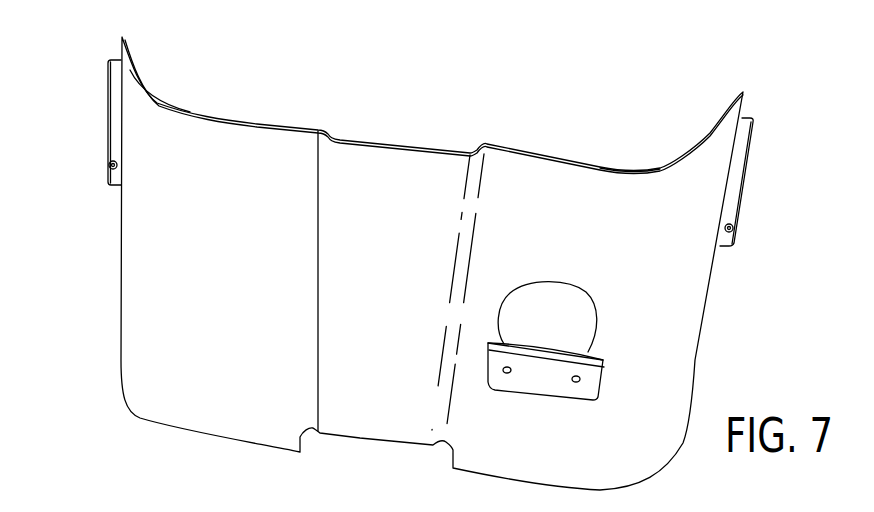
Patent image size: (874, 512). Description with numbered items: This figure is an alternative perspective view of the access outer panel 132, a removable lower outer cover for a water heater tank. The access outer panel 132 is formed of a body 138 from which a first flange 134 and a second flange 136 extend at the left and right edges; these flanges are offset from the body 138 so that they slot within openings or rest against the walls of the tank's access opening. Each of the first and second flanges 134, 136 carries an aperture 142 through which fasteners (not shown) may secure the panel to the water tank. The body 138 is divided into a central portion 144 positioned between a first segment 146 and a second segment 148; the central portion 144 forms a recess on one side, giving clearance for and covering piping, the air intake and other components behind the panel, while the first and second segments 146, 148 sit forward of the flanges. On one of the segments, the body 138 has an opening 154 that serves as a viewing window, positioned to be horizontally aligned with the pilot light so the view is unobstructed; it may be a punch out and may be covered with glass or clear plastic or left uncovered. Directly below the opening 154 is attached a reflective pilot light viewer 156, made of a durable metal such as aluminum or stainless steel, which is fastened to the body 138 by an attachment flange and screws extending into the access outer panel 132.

The access outer panel 132 is at (583, 90).
The first flange 134 is at (116, 95).
The second flange 136 is at (744, 141).
The body 138 is at (268, 156).
The aperture 142 is at (116, 164).
The central portion 144 is at (394, 177).
The first segment 146 is at (170, 132).
The second segment 148 is at (650, 214).
The opening 154 is at (548, 313).
The reflective pilot light viewer 156 is at (537, 368).